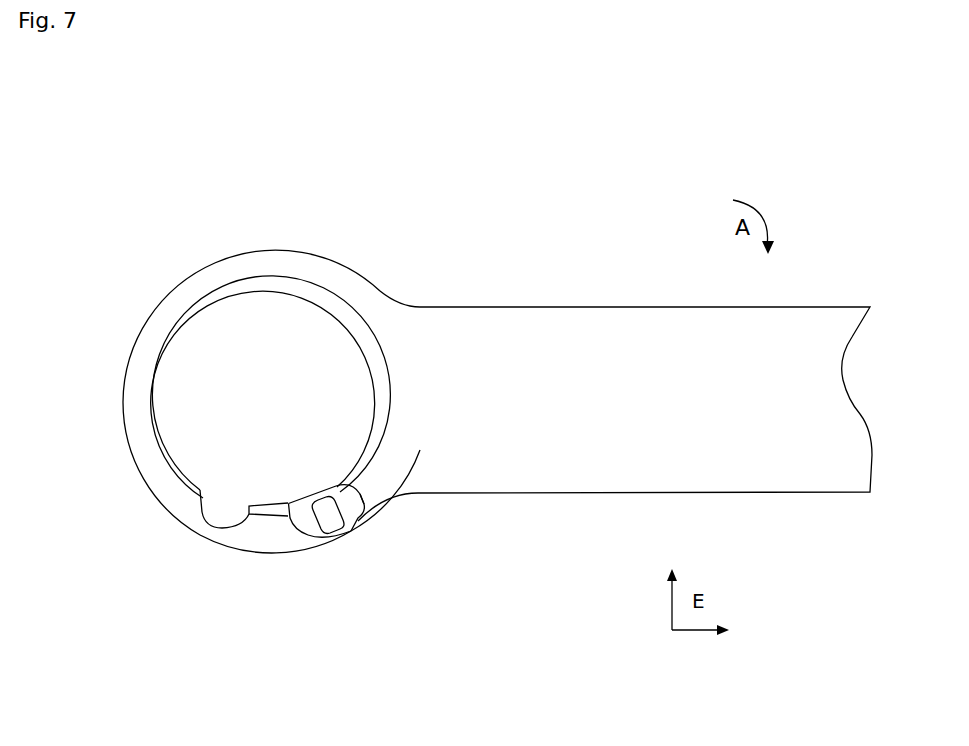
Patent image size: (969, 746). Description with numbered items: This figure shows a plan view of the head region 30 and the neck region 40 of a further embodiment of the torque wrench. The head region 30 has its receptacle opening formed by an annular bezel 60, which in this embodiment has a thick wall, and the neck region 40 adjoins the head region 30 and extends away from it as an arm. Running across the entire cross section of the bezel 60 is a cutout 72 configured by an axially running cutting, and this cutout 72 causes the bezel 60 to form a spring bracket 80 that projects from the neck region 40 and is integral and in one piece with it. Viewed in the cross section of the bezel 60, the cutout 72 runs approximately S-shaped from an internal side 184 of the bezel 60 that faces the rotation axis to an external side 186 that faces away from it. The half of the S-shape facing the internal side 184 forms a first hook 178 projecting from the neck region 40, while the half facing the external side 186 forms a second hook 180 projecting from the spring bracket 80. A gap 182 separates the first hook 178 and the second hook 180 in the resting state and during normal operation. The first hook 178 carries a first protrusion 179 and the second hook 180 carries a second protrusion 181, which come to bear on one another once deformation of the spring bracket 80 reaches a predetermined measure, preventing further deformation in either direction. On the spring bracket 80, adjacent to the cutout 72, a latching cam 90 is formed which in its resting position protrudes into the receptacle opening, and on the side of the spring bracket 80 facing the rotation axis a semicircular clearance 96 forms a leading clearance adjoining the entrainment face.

The head region 30 is at (271, 421).
The neck region 40 is at (588, 265).
The bezel 60 is at (170, 504).
The spring bracket 80 is at (170, 504).
The semicircular clearance 96 is at (222, 517).
The latching cam 90 is at (256, 514).
The external side 186 is at (275, 558).
The first protrusion 179 is at (305, 519).
The second hook 180 is at (317, 528).
The second protrusion 181 is at (353, 525).
The gap 182 is at (358, 522).
The cutout 72 is at (418, 570).
The internal side 184 is at (335, 487).
The first hook 178 is at (312, 495).